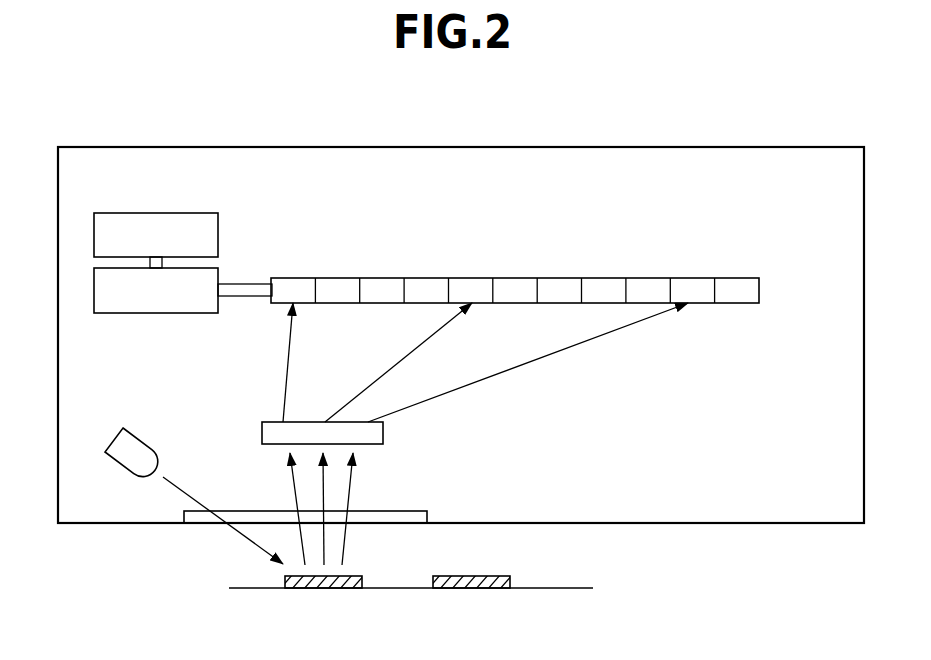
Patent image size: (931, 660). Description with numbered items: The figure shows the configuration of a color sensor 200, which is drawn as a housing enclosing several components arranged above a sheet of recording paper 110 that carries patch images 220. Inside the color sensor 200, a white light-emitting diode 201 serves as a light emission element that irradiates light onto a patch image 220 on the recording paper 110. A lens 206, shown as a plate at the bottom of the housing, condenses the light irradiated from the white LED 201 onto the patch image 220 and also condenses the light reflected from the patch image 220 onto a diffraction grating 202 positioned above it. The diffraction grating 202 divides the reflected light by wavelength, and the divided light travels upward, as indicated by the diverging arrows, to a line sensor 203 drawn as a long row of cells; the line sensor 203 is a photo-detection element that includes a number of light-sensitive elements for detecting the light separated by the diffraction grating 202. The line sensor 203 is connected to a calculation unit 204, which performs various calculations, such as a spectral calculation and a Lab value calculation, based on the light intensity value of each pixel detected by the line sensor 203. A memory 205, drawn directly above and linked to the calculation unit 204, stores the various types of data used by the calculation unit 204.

The color sensor 200 is at (587, 147).
The white light-emitting diode (LED) 201 is at (144, 439).
The diffraction grating 202 is at (385, 432).
The line sensor 203 is at (296, 278).
The calculation unit 204 is at (155, 314).
The memory 205 is at (157, 213).
The lens 206 is at (402, 511).
The patch image 220 is at (283, 579).
The recording paper 110 is at (550, 590).